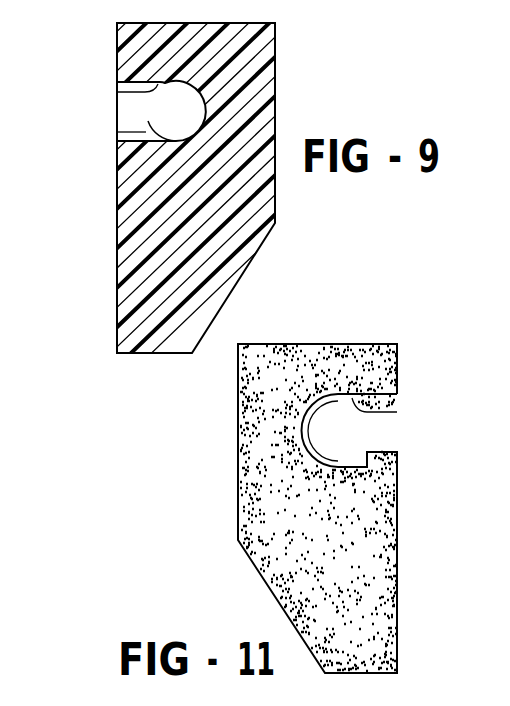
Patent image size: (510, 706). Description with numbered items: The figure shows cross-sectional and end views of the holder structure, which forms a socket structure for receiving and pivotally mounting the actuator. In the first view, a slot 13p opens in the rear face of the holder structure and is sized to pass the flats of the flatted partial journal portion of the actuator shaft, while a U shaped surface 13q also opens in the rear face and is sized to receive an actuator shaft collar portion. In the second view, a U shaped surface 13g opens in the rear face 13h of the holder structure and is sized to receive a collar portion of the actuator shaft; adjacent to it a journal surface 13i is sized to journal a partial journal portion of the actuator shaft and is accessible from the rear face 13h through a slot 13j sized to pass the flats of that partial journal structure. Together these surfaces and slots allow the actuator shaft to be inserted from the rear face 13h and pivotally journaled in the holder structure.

In FIG. 9, the slot 13p is at (117, 101).
In FIG. 9, the U shaped surface 13q is at (148, 121).
In FIG. 11, the journal surface 13i is at (322, 405).
In FIG. 11, the slot 13j is at (377, 415).
In FIG. 11, the U shaped surface 13g is at (370, 463).
In FIG. 11, the rear face 13h is at (399, 643).